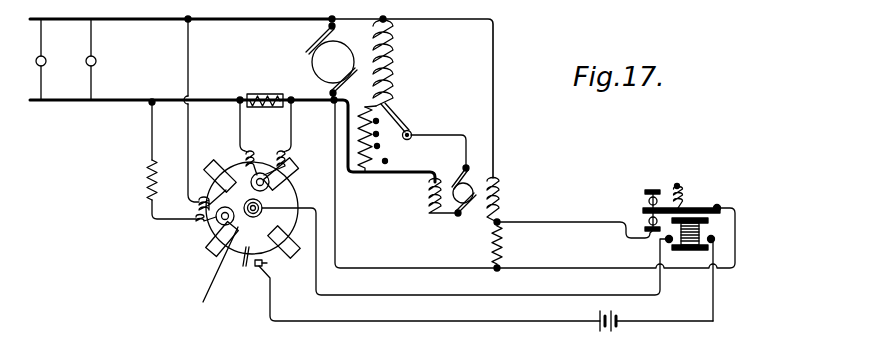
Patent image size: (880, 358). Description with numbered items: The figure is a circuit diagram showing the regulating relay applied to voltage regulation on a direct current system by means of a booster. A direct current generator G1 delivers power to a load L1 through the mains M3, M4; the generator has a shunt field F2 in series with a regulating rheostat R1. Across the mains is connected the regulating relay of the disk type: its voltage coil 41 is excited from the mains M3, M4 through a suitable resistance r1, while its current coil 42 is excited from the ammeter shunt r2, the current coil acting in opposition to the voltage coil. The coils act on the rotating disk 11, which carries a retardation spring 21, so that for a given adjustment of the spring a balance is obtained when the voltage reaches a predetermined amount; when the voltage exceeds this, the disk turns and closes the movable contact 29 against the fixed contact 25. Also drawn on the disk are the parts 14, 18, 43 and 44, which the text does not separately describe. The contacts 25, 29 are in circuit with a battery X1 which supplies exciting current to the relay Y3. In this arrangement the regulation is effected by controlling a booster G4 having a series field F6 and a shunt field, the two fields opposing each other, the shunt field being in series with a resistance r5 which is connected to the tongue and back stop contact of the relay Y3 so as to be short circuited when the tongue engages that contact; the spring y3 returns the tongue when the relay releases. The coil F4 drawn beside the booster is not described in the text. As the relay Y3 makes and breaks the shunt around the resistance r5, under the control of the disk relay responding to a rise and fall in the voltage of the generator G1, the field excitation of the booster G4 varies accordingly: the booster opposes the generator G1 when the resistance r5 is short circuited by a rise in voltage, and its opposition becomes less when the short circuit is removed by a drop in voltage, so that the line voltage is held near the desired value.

The load L1 is at (81, 59).
The main M3 is at (261, 97).
The main M4 is at (205, 114).
The direct current generator G1 is at (319, 61).
The shunt field F2 is at (410, 60).
The regulating rheostat R1 is at (386, 147).
The series field F6 is at (428, 193).
The booster G4 is at (463, 205).
The field coil F4 is at (505, 208).
The resistance r1 is at (173, 164).
The ammeter shunt r2 is at (265, 125).
The resistance r5 is at (504, 254).
The disk 11 is at (216, 229).
The contact segment 14 is at (218, 160).
The contact segment 18 is at (300, 247).
The retardation spring 21 is at (255, 217).
The fixed contact 25 is at (270, 278).
The movable contact 29 is at (243, 268).
The voltage coil 41 is at (212, 250).
The current coil 42 is at (295, 182).
The arm 43 is at (205, 270).
The contact bolt 44 is at (270, 175).
The relay Y3 is at (682, 251).
The spring y3 is at (675, 186).
The battery X1 is at (656, 330).